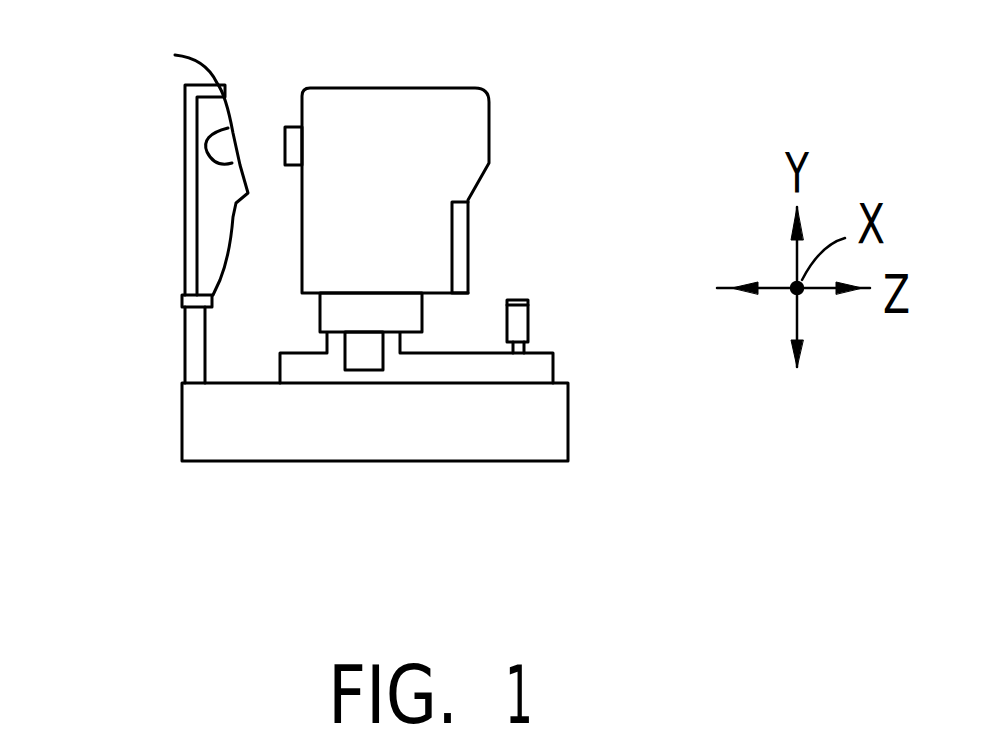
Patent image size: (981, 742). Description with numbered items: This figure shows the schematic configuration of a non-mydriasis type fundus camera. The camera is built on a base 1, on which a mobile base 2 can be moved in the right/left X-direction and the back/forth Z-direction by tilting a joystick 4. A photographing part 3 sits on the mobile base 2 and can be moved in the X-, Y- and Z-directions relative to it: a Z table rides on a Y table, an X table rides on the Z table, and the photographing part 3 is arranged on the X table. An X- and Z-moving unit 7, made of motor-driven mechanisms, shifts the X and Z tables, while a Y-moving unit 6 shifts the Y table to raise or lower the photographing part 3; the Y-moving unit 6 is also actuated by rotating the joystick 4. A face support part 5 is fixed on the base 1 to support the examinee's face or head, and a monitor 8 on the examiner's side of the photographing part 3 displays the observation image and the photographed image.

The base 1 is at (458, 438).
The mobile base 2 is at (542, 370).
The photographing part 3 is at (415, 105).
The joystick 4 is at (528, 318).
The face support part 5 is at (158, 322).
The Y-moving unit 6 is at (358, 366).
The X- and Z-moving unit 7 is at (425, 315).
The monitor 8 is at (462, 230).